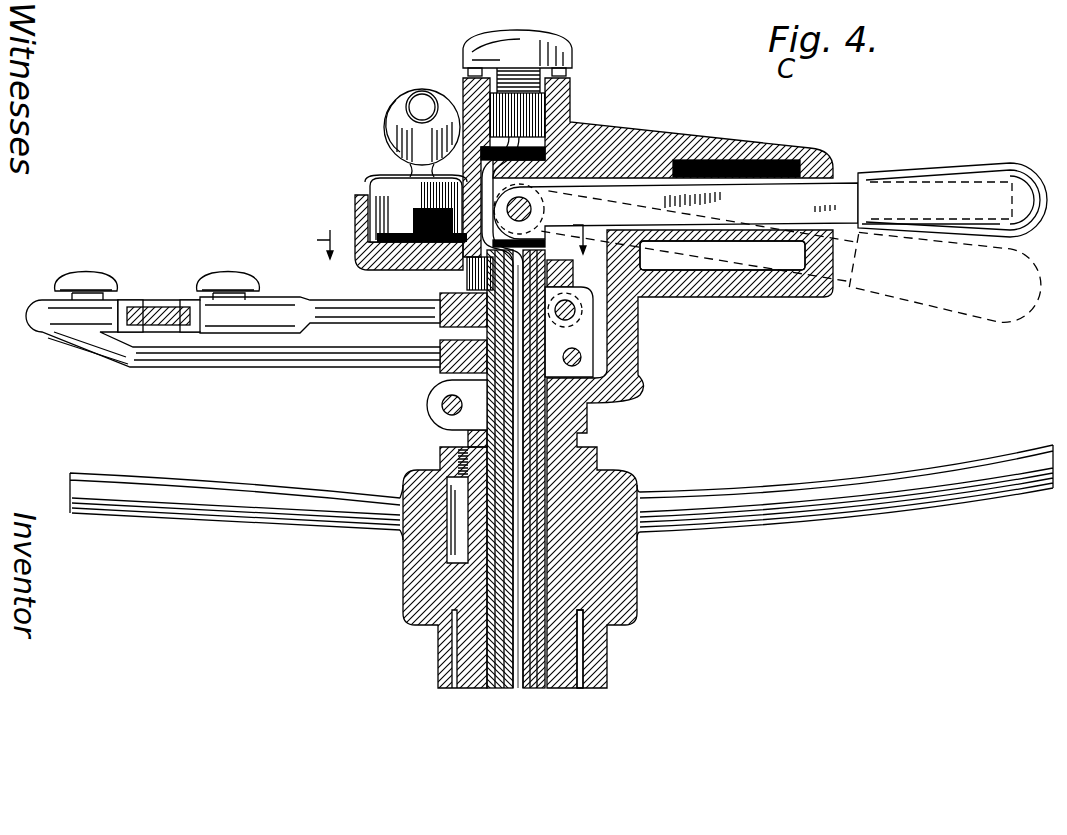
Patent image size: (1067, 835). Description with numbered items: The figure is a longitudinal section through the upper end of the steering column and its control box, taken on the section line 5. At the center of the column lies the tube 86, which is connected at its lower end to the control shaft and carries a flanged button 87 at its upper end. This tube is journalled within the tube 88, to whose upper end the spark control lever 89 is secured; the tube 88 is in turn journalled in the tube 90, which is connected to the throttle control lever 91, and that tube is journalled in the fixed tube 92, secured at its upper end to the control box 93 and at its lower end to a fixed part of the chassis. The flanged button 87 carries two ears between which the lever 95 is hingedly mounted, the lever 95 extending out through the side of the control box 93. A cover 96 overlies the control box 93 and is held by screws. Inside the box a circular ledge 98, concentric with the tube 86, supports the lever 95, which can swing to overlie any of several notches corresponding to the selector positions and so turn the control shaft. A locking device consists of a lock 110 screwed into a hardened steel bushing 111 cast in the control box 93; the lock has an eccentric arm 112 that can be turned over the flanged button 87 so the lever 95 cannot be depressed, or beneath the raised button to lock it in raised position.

The section line 5- 5 is at (449, 249).
The tube 86 is at (531, 689).
The flanged button 87 is at (552, 264).
The tube 88 is at (500, 689).
The spark control lever 89 is at (343, 311).
The tube 90 is at (548, 691).
The throttle control lever 91 is at (363, 358).
The fixed tube 92 is at (484, 689).
The control box 93 is at (613, 383).
The lever 95 is at (770, 245).
The cover 96 is at (653, 144).
The circular ledge 98 is at (641, 251).
The lock 110 is at (388, 185).
The hardened steel bushing 111 is at (357, 209).
The eccentric arm 112 is at (437, 269).